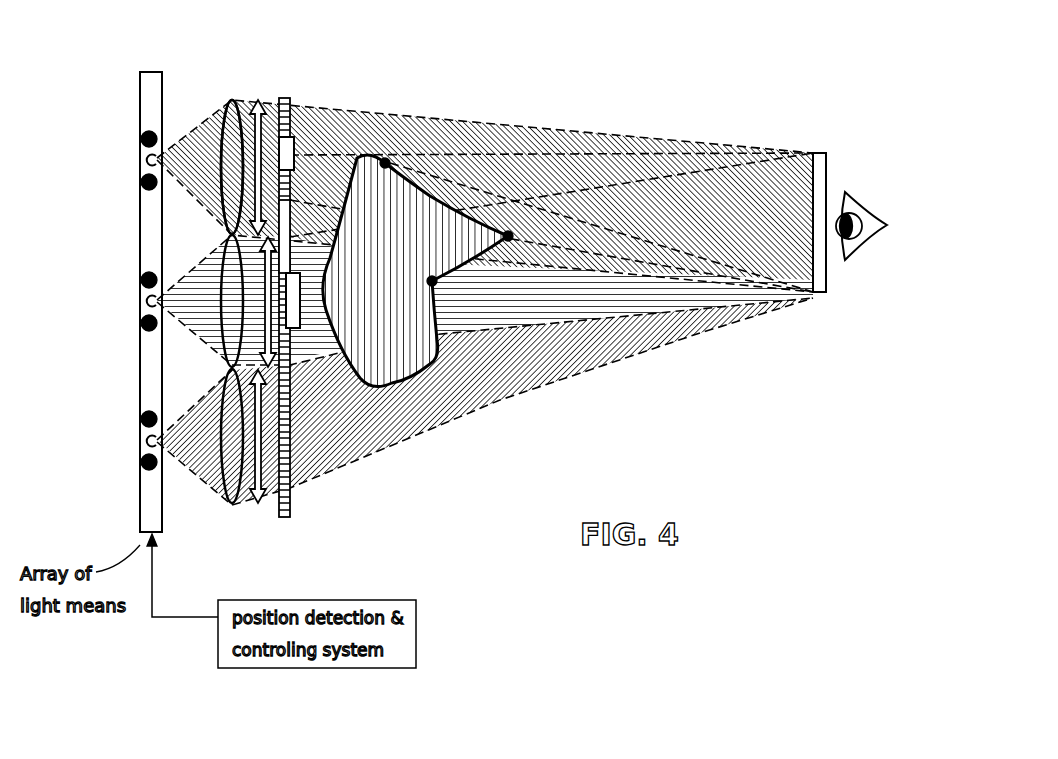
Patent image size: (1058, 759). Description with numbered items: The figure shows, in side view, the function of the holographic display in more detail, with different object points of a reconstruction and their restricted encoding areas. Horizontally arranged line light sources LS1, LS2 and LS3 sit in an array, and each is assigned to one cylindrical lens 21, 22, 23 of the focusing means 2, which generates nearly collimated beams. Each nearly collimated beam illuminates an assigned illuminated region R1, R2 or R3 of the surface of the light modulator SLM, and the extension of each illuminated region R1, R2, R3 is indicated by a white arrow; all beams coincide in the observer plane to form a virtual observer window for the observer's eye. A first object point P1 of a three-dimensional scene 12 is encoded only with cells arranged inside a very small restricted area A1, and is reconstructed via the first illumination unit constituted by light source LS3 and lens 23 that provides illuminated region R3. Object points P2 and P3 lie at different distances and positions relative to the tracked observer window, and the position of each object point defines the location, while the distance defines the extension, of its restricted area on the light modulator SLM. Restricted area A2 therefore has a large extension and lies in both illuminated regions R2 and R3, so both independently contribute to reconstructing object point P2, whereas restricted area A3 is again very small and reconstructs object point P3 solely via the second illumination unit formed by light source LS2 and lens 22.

The focusing means 2 is at (230, 153).
The cylindrical lens 21 is at (240, 492).
The cylindrical lens 22 is at (236, 246).
The cylindrical lens 23 is at (240, 202).
The reconstructed three-dimensional object 12 is at (428, 382).
The illuminated region R1 is at (255, 505).
The illuminated region R2 is at (268, 505).
The illuminated region R3 is at (262, 100).
The restricted area A1 is at (295, 158).
The restricted area A2 is at (293, 236).
The restricted area A3 is at (298, 322).
The object point P1 is at (400, 152).
The object point P2 is at (498, 222).
The object point P3 is at (449, 293).
The line light source LS1 is at (130, 443).
The line light source LS2 is at (130, 304).
The line light source LS3 is at (130, 163).
The light modulator SLM is at (311, 320).